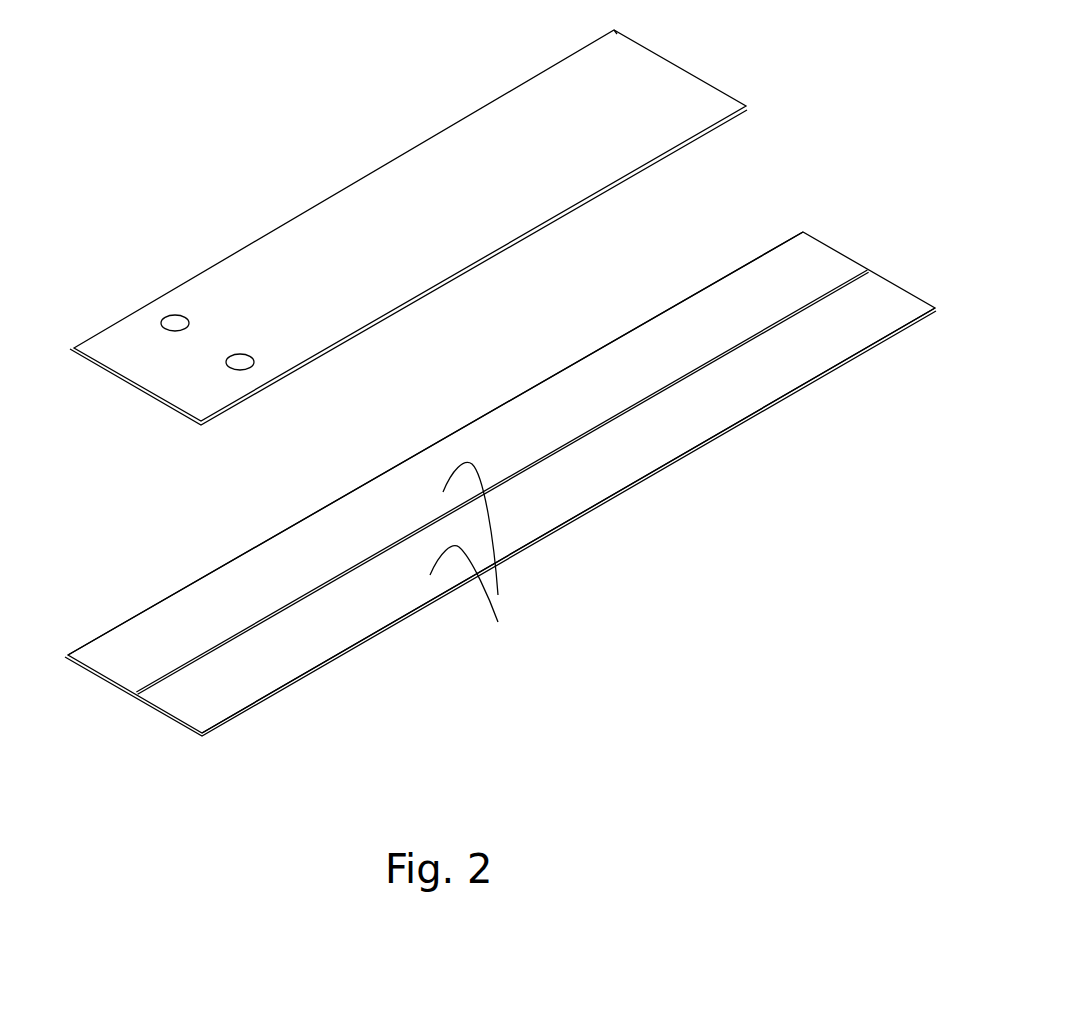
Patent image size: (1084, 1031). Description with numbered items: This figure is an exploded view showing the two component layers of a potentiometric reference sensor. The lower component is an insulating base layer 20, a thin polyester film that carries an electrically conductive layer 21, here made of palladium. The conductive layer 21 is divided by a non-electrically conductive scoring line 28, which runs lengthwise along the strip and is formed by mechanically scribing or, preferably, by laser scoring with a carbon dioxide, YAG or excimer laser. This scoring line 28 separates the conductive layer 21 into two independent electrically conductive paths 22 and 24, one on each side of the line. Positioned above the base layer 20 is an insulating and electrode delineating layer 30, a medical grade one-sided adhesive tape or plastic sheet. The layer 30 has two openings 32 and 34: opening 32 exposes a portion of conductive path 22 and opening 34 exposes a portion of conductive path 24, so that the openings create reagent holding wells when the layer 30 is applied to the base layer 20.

The insulating base layer 20 is at (610, 502).
The electrically conductive layer 21 is at (483, 551).
The electrically conductive path 22 is at (795, 272).
The electrically conductive path 24 is at (885, 302).
The non-electrically conductive scoring line 28 is at (212, 645).
The insulating and electrode delineating layer 30 is at (408, 152).
The opening 32 is at (173, 314).
The opening 34 is at (251, 353).